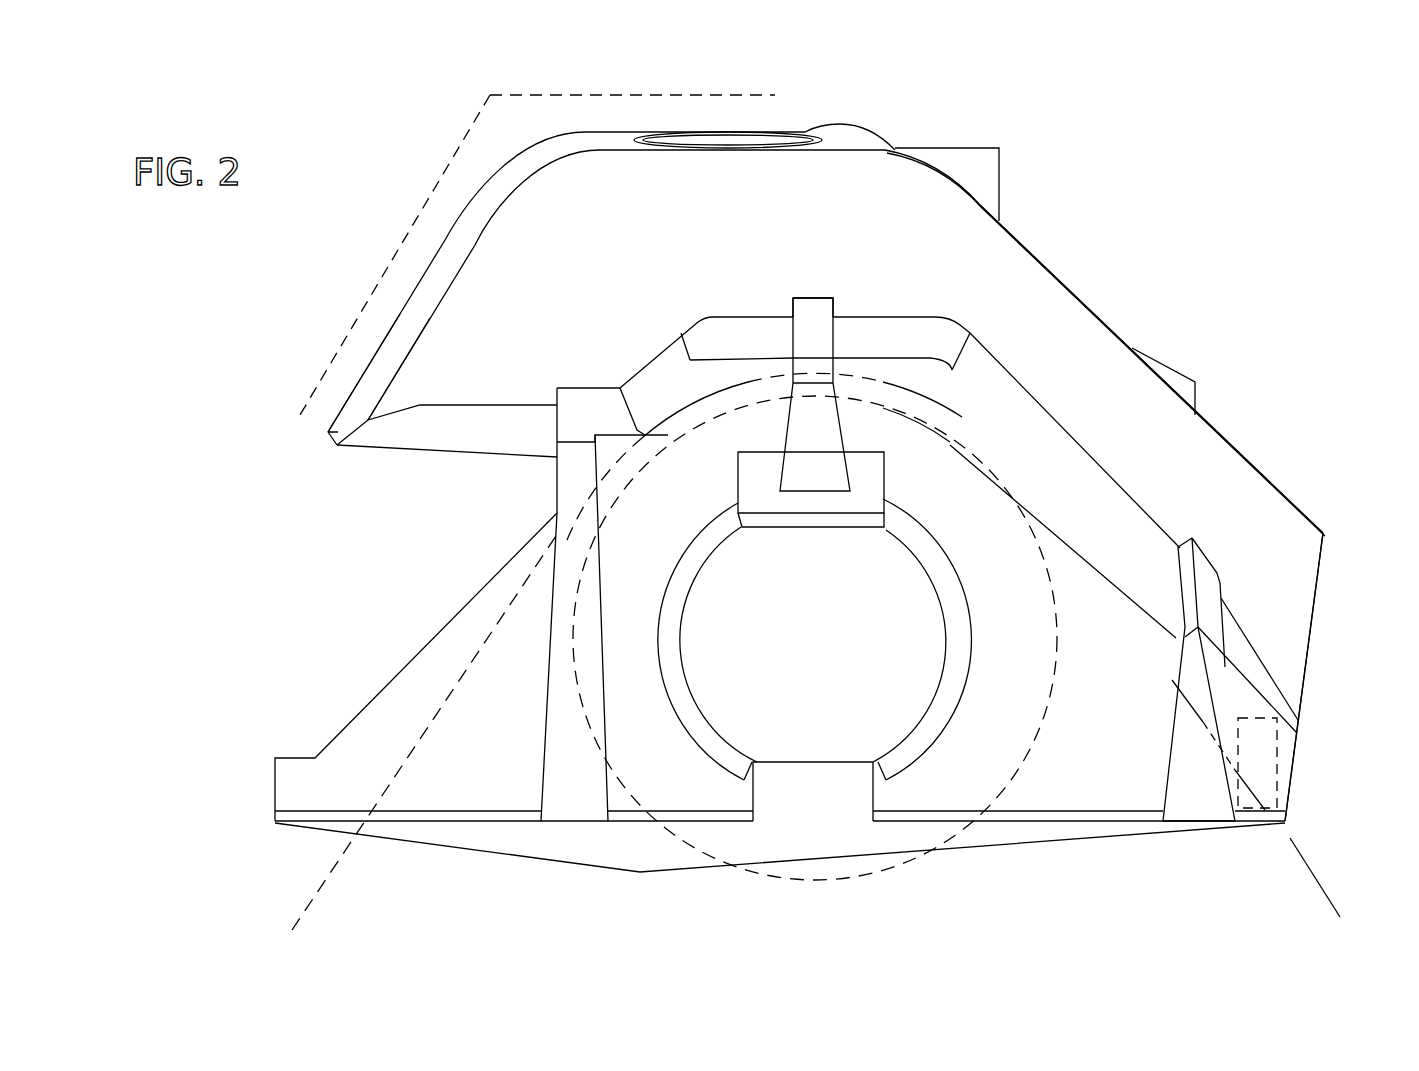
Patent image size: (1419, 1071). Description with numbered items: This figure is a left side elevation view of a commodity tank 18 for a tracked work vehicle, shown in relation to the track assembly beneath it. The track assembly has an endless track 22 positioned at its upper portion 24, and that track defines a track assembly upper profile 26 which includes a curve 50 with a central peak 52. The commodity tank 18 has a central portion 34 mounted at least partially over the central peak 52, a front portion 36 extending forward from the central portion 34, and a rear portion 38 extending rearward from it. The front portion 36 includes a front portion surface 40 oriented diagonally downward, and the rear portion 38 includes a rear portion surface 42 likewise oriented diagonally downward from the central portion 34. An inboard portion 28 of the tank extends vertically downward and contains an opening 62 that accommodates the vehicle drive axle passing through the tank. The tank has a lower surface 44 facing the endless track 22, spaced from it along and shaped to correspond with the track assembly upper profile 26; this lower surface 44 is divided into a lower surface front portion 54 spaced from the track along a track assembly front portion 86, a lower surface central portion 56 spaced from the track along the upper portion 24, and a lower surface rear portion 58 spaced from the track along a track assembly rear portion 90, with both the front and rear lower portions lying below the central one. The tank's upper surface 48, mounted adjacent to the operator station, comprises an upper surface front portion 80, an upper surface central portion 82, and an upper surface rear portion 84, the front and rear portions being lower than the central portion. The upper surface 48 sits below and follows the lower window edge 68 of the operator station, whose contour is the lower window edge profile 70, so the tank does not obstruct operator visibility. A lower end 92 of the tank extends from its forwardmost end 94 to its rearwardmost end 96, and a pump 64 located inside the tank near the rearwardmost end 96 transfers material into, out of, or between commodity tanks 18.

The commodity tank 18 is at (1065, 100).
The endless track 22 is at (1158, 665).
The upper portion of the track assembly 24 is at (782, 378).
The track assembly upper profile 26 is at (1013, 402).
The inboard portion 28 is at (1033, 828).
The central portion 34 is at (782, 180).
The front portion 36 is at (350, 457).
The rear portion 38 is at (1068, 272).
The front portion surface 40 is at (500, 360).
The rear portion surface 42 is at (1137, 462).
The lower surface 44 is at (740, 337).
The upper surface 48 is at (842, 133).
The curve 50 is at (913, 390).
The central peak 52 is at (828, 383).
The lower surface front portion 54 is at (637, 400).
The lower surface central portion 56 is at (863, 337).
The lower surface rear portion 58 is at (1077, 477).
The opening 62 is at (707, 730).
The pump 64 is at (1277, 770).
The lower window edge 68 is at (535, 95).
The lower window edge profile 70 is at (457, 150).
The upper surface front portion 80 is at (450, 257).
The upper surface central portion 82 is at (608, 145).
The upper surface rear portion 84 is at (1015, 252).
The track assembly front portion 86 is at (570, 490).
The track assembly rear portion 90 is at (1108, 583).
The lower end 92 is at (466, 833).
The forwardmost end 94 is at (270, 783).
The rearwardmost end 96 is at (1315, 676).